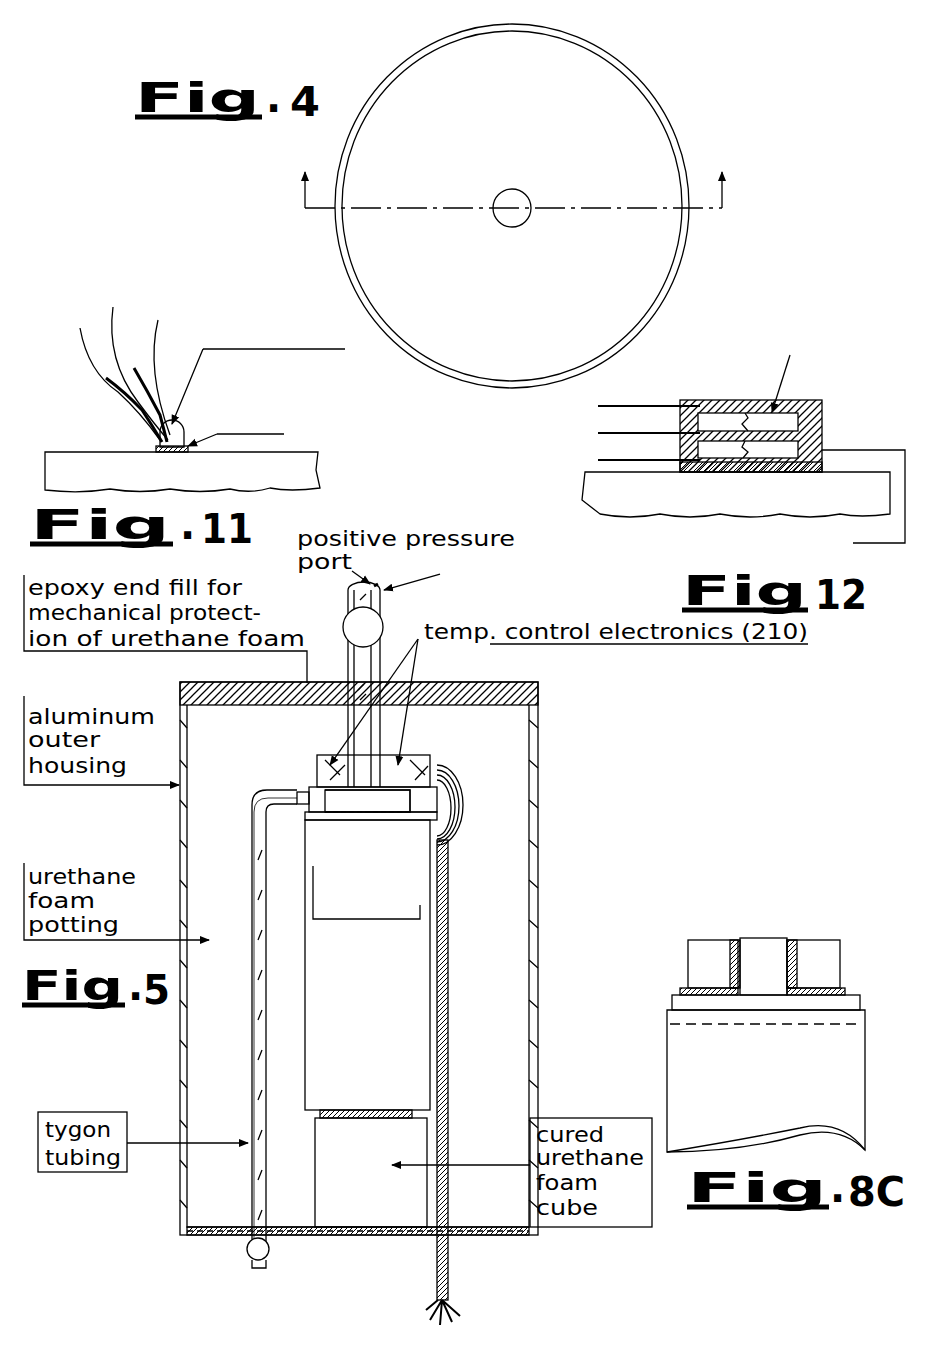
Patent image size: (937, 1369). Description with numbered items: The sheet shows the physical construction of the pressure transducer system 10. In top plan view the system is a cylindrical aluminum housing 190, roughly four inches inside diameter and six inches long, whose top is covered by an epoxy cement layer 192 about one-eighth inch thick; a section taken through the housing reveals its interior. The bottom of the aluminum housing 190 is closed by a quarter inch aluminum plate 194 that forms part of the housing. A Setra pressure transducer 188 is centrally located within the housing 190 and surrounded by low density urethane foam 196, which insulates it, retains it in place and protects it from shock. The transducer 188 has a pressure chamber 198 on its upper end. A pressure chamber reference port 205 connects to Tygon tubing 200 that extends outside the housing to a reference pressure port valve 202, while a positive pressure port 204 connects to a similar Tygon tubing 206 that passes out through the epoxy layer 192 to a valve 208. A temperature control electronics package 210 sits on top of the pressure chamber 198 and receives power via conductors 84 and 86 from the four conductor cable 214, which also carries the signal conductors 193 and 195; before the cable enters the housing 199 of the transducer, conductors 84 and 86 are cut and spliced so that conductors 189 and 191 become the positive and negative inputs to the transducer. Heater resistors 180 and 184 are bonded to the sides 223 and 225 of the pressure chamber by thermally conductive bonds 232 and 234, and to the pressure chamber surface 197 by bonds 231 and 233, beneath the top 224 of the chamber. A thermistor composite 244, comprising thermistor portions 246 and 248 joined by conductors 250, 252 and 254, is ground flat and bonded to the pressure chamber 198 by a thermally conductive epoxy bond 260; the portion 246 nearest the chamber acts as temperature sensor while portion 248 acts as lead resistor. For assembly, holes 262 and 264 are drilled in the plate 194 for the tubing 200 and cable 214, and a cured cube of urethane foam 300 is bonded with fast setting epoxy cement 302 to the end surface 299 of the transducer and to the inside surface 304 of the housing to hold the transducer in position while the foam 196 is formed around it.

In FIG. 4, the pressure transducer system 10 is at (666, 74).
In FIG. 5, the pressure transducer system 10 is at (548, 770).
In FIG. 5, the conductor 84 is at (455, 772).
In FIG. 5, the conductor 86 is at (462, 796).
In FIG. 5, the heater resistor 180 is at (380, 792).
In FIG. 8C, the heater resistor 180 is at (690, 944).
In FIG. 8C, the heater resistor 184 is at (838, 948).
In FIG. 5, the pressure transducer 188 is at (388, 1061).
In FIG. 8C, the pressure transducer 188 is at (690, 1082).
In FIG. 5, the conductor 189 is at (466, 815).
In FIG. 4, the aluminum housing 190 is at (684, 138).
In FIG. 5, the aluminum housing 190 is at (538, 884).
In FIG. 5, the conductor 191 is at (468, 798).
In FIG. 4, the epoxy cement layer 192 is at (642, 183).
In FIG. 5, the epoxy cement layer 192 is at (482, 696).
In FIG. 5, the signal conductor 193 is at (456, 1322).
In FIG. 5, the aluminum plate 194 is at (486, 1238).
In FIG. 5, the signal conductor 195 is at (450, 1306).
In FIG. 5, the urethane foam 196 is at (505, 1024).
In FIG. 11, the pressure chamber surface 197 is at (302, 456).
In FIG. 12, the pressure chamber surface 197 is at (600, 470).
In FIG. 5, the pressure chamber surface 197 is at (298, 792).
In FIG. 8C, the pressure chamber surface 197 is at (672, 992).
In FIG. 11, the pressure chamber 198 is at (318, 478).
In FIG. 12, the pressure chamber 198 is at (598, 475).
In FIG. 5, the pressure chamber 198 is at (418, 796).
In FIG. 8C, the pressure chamber 198 is at (768, 955).
In FIG. 5, the housing of the pressure transducer 199 is at (305, 1012).
In FIG. 8C, the housing of the pressure transducer 199 is at (690, 1046).
In FIG. 5, the Tygon tubing 200 is at (254, 1060).
In FIG. 5, the reference pressure port valve 202 is at (246, 1252).
In FIG. 5, the positive pressure port 204 is at (334, 764).
In FIG. 5, the pressure chamber reference port 205 is at (304, 798).
In FIG. 4, the Tygon tubing 206 is at (518, 190).
In FIG. 5, the Tygon tubing 206 is at (348, 660).
In FIG. 5, the valve 208 is at (382, 628).
In FIG. 5, the temperature control electronics package 210 is at (428, 762).
In FIG. 5, the four conductor cable 214 is at (446, 1076).
In FIG. 5, the side of the pressure chamber 223 is at (300, 808).
In FIG. 8C, the side of the pressure chamber 223 is at (735, 940).
In FIG. 8C, the top of the pressure chamber 224 is at (765, 936).
In FIG. 8C, the side of the pressure chamber 225 is at (792, 940).
In FIG. 8C, the thermally conductive bond 231 is at (680, 988).
In FIG. 8C, the thermally conductive bond 232 is at (735, 945).
In FIG. 8C, the thermally conductive bond 233 is at (845, 990).
In FIG. 8C, the thermally conductive bond 234 is at (800, 946).
In FIG. 11, the thermistor composite 244 is at (175, 420).
In FIG. 12, the thermistor composite 244 is at (772, 410).
In FIG. 12, the thermistor portion 246 is at (810, 452).
In FIG. 12, the thermistor portion 248 is at (820, 420).
In FIG. 11, the conductor 250 is at (156, 366).
In FIG. 12, the conductor 250 is at (672, 406).
In FIG. 11, the conductor 252 is at (102, 370).
In FIG. 12, the conductor 252 is at (606, 462).
In FIG. 11, the conductor 254 is at (125, 356).
In FIG. 12, the conductor 254 is at (620, 437).
In FIG. 11, the thermally conductive epoxy bond 260 is at (160, 447).
In FIG. 12, the thermally conductive epoxy bond 260 is at (826, 470).
In FIG. 5, the hole 262 is at (252, 1214).
In FIG. 5, the hole 264 is at (438, 1230).
In FIG. 5, the end surface of the pressure transducer housing 299 is at (315, 1120).
In FIG. 5, the cube of urethane foam 300 is at (383, 1151).
In FIG. 5, the fast setting epoxy cement 302 is at (438, 1116).
In FIG. 5, the inside surface of the housing 304 is at (300, 1226).